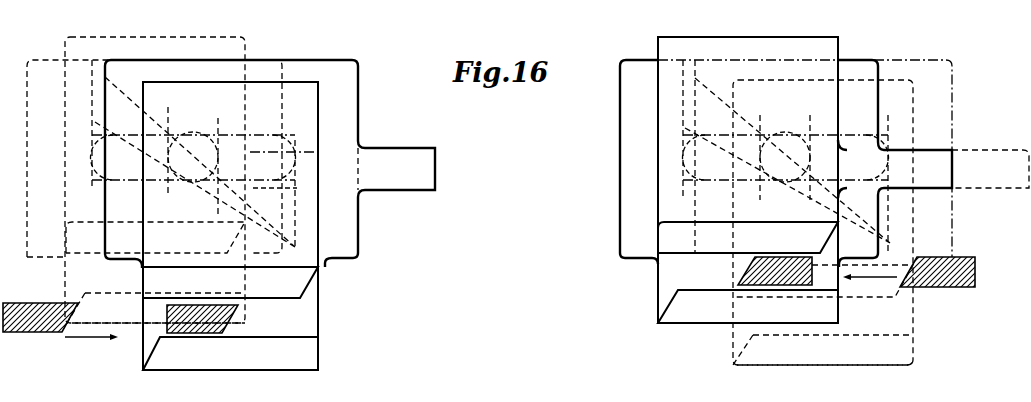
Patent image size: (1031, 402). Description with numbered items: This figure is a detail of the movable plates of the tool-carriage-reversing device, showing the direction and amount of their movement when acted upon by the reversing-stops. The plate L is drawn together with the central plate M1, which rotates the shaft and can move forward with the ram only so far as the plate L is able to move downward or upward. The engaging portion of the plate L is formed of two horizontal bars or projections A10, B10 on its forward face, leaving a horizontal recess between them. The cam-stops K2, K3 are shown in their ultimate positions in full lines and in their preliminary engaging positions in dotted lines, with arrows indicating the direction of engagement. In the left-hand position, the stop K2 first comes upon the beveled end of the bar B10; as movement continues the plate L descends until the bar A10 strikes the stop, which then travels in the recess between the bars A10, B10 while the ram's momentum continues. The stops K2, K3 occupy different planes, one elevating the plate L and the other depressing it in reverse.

The central plate M1 is at (528, 164).
The plate L is at (489, 203).
The horizontal bar or projection A10 is at (489, 260).
The horizontal bar or projection B10 is at (490, 330).
The cam-stop K2 is at (10, 333).
The cam-stop K3 is at (738, 275).